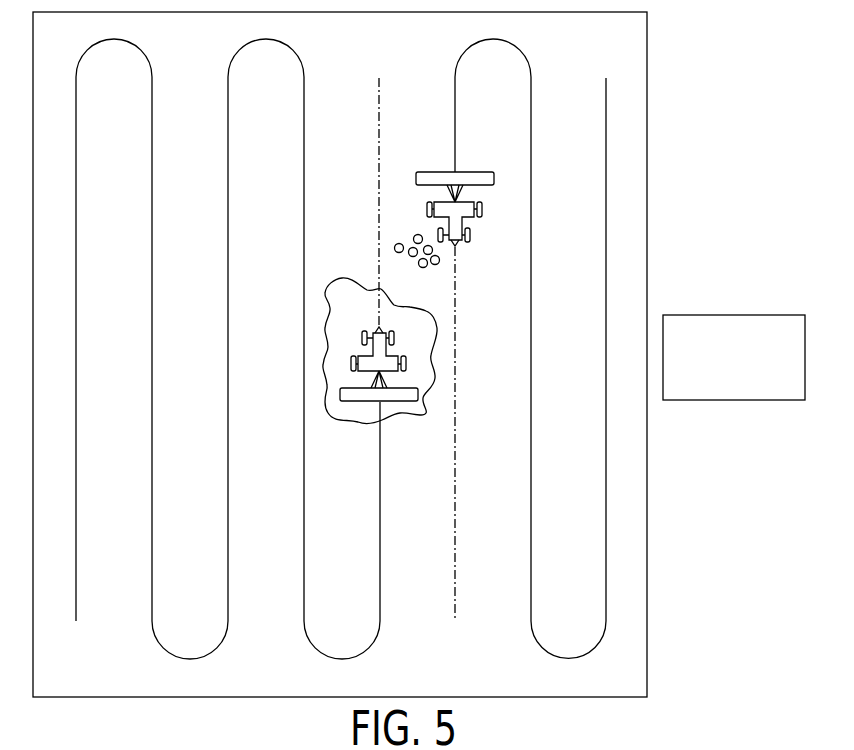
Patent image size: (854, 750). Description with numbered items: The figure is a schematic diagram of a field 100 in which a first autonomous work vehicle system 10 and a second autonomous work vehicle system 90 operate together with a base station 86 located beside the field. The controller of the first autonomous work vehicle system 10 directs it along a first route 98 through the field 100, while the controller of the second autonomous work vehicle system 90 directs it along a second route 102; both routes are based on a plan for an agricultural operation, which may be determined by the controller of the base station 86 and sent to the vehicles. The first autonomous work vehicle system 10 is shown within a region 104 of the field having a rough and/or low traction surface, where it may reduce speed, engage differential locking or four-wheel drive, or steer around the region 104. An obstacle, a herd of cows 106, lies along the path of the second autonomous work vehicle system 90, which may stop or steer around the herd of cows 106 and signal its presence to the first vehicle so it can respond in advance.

The field 100 is at (620, 75).
The first route 98 is at (75, 241).
The second route 102 is at (530, 160).
The second autonomous work vehicle system 90 is at (420, 168).
The first autonomous work vehicle system 10 is at (357, 344).
The region 104 is at (328, 298).
The herd of cows 106 is at (430, 274).
The base station 86 is at (737, 315).